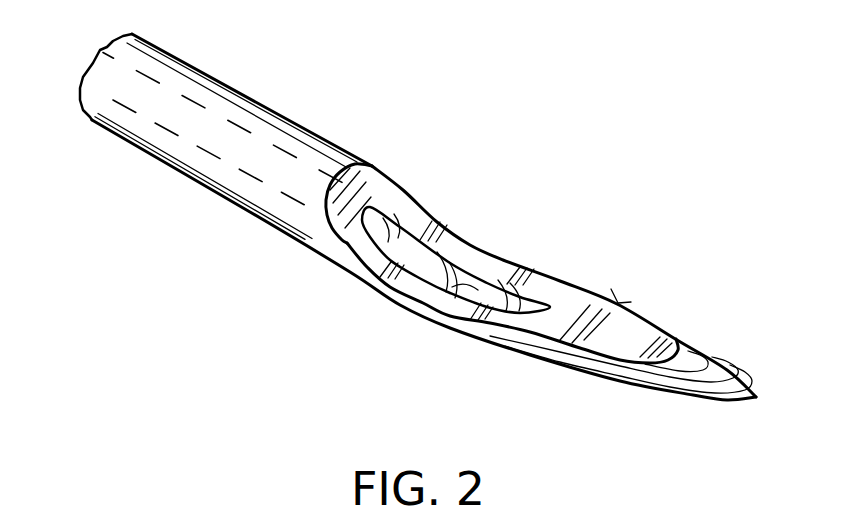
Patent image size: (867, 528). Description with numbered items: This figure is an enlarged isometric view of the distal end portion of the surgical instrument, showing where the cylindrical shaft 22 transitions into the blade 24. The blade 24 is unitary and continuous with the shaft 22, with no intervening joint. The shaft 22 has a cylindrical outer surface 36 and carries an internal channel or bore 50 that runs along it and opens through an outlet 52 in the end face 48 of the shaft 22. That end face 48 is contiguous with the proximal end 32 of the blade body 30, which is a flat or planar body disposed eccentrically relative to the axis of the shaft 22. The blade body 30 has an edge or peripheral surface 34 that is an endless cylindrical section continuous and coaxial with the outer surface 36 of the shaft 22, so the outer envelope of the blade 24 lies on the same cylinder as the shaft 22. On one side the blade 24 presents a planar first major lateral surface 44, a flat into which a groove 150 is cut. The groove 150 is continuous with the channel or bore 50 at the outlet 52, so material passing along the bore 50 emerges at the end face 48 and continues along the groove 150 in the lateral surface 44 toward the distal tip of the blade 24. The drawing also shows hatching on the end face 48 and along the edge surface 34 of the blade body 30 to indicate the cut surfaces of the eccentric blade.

The cylindrical shaft 22 is at (157, 55).
The cylindrical outer surface 36 is at (207, 93).
The channel or bore 50 is at (107, 137).
The end face 48 is at (367, 185).
The proximal end 32 is at (450, 248).
The blade 24 is at (558, 264).
The blade body 30 is at (618, 303).
The first major lateral surface 44 is at (632, 333).
The edge or peripheral surface 34 is at (607, 373).
The outlet 52 is at (370, 230).
The groove 150 is at (447, 288).